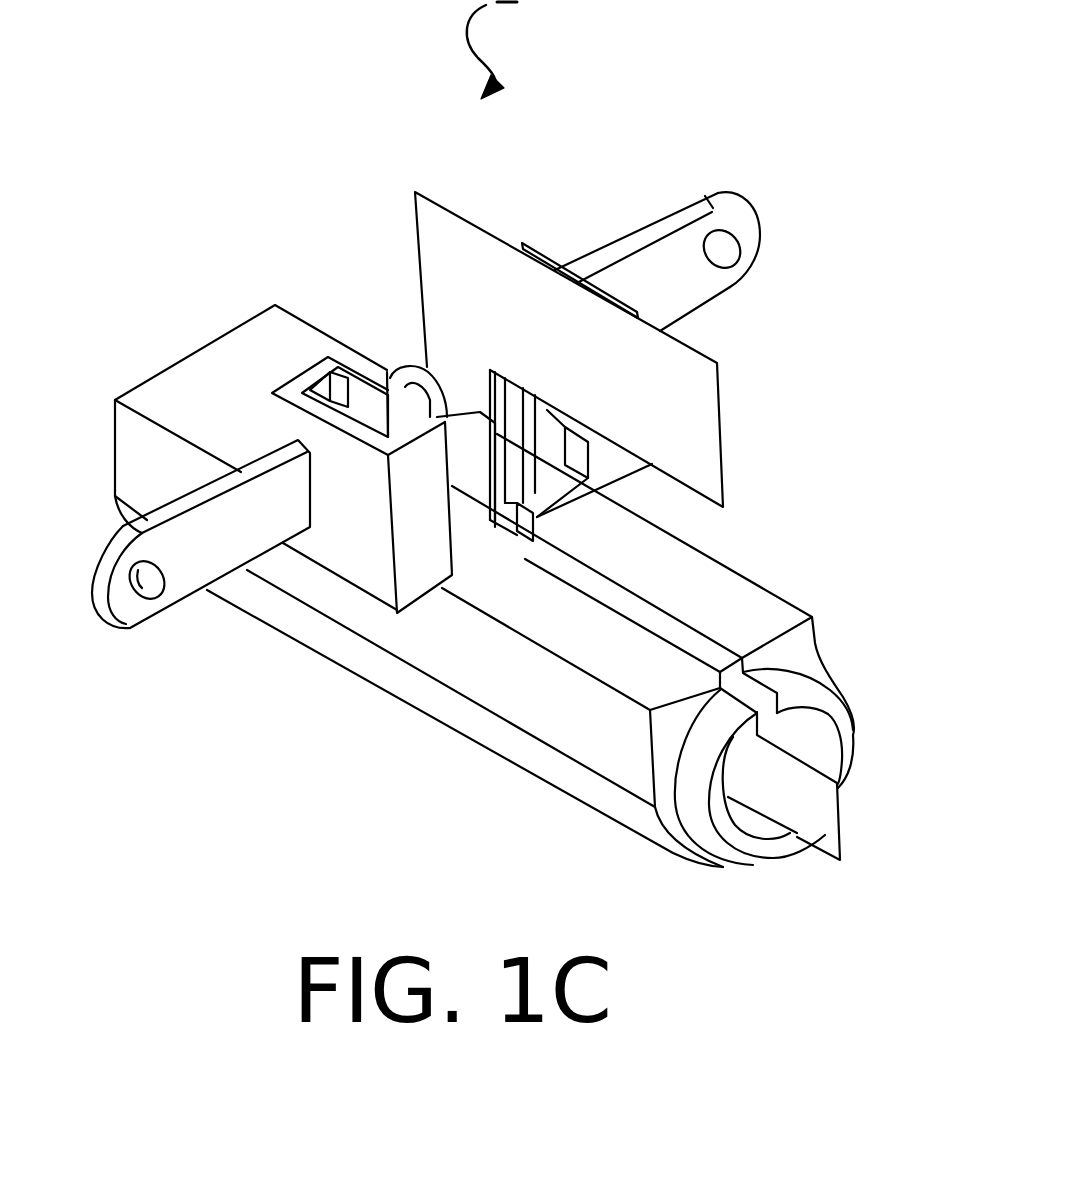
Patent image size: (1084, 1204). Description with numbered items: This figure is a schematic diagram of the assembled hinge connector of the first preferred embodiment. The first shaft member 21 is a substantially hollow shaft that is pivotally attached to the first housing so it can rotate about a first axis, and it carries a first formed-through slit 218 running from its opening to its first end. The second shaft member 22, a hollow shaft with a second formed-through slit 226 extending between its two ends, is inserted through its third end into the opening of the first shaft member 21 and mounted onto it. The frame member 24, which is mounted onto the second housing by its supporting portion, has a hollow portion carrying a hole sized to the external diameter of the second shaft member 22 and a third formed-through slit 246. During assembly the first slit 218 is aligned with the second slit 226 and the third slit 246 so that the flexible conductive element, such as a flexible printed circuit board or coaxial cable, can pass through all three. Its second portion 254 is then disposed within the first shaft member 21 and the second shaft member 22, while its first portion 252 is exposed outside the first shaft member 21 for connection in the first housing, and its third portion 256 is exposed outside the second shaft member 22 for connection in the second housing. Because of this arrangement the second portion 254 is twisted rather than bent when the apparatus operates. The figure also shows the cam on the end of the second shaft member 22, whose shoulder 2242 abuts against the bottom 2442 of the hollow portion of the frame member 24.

The first shaft member 21 is at (712, 610).
The second shaft member 22 is at (398, 377).
The frame member 24 is at (300, 427).
The first formed-through slit 218 is at (693, 643).
The second formed-through slit 226 is at (478, 466).
The third formed-through slit 246 is at (507, 528).
The first portion 252 is at (808, 803).
The second portion 254 is at (427, 368).
The third portion 256 is at (703, 440).
The shoulder 2242 is at (463, 533).
The bottom 2442 is at (505, 524).